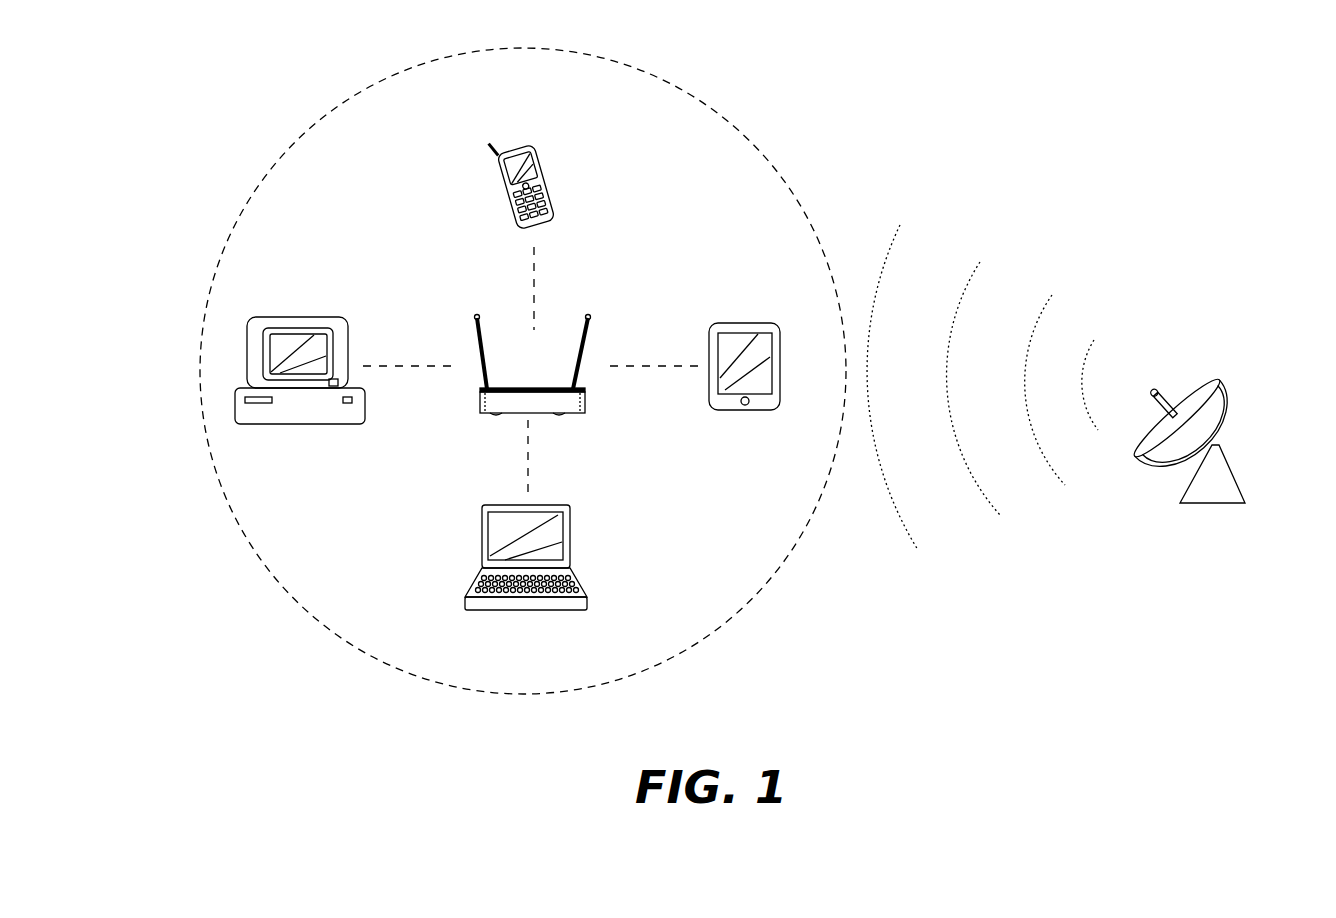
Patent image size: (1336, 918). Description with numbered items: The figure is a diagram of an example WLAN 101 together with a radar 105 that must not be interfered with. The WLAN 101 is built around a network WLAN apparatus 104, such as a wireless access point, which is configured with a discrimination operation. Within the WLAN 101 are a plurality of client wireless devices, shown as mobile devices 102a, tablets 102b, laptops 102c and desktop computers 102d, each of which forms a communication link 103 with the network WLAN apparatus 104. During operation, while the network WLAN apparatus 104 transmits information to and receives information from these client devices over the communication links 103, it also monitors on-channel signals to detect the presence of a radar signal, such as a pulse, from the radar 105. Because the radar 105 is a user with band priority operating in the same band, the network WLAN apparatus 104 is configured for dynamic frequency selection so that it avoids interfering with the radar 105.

The WLAN 101 is at (291, 141).
The mobile devices 102a is at (500, 185).
The tablets 102b is at (742, 322).
The laptops 102c is at (468, 540).
The desktop computers 102d is at (242, 357).
The communication links 103 is at (541, 272).
The network WLAN apparatus 104 is at (586, 413).
The radar 105 is at (1241, 398).